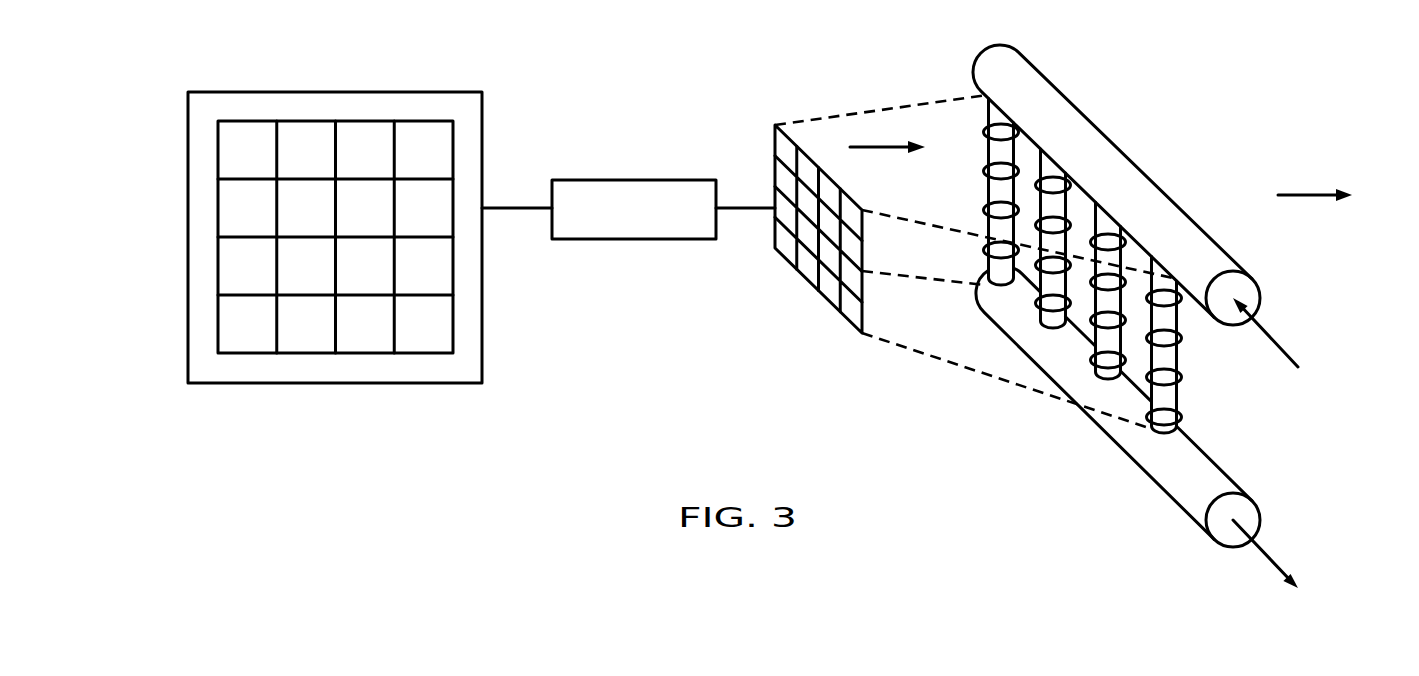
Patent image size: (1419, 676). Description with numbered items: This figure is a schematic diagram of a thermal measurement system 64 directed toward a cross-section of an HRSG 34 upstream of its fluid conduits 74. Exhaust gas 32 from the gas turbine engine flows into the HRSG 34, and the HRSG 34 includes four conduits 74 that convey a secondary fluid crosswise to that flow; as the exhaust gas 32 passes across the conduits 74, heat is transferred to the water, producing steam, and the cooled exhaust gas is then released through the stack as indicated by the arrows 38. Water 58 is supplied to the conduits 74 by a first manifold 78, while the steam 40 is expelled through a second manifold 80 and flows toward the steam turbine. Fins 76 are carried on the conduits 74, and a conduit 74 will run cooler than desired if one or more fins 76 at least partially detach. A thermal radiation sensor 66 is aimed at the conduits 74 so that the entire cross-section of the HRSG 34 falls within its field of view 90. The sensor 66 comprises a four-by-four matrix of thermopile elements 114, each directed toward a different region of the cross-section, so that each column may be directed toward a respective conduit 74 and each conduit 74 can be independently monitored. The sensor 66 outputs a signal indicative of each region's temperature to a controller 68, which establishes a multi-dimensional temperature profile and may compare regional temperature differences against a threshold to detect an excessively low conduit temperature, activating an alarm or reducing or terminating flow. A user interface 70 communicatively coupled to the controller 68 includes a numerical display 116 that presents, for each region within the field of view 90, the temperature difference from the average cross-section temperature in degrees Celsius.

The exhaust gas 32 is at (882, 146).
The HRSG 34 is at (1167, 84).
The arrows 38 is at (1300, 193).
The steam 40 is at (1268, 555).
The water 58 is at (1277, 337).
The thermal measurement system 64 is at (672, 293).
The thermal radiation sensor 66 is at (825, 297).
The controller 68 is at (635, 180).
The user interface 70 is at (482, 134).
The conduits 74 is at (988, 180).
The fins 76 is at (985, 210).
The first manifold 78 is at (1120, 150).
The second manifold 80 is at (1112, 440).
The field of view 90 is at (885, 109).
The thermopile elements 114 is at (806, 167).
The numerical display 116 is at (218, 147).